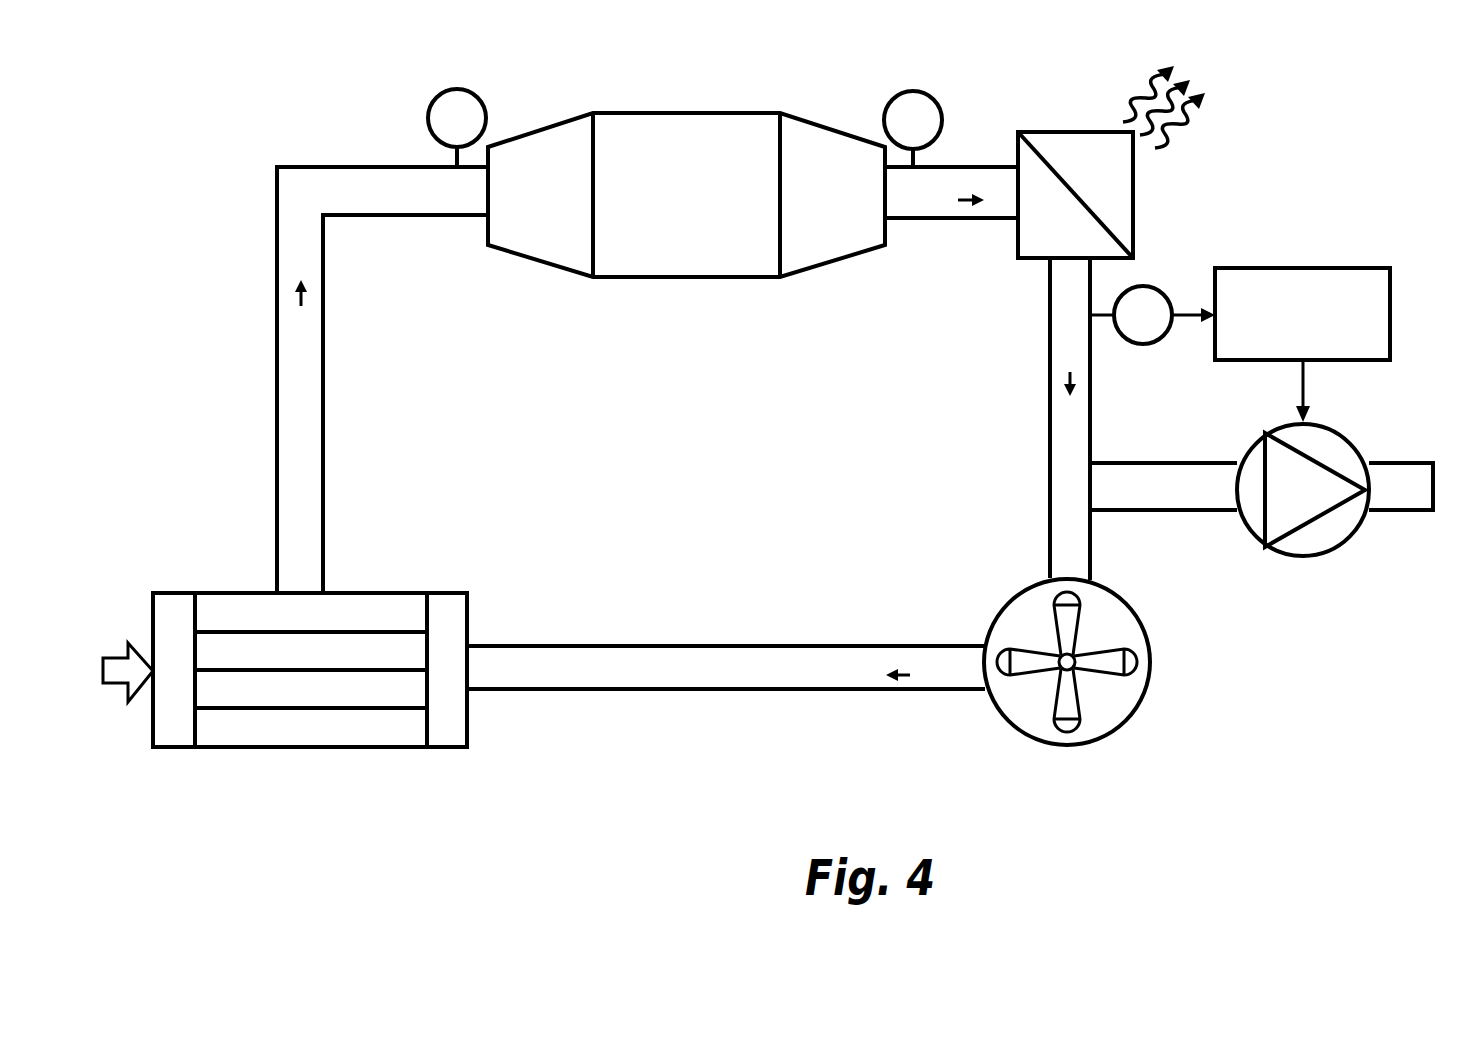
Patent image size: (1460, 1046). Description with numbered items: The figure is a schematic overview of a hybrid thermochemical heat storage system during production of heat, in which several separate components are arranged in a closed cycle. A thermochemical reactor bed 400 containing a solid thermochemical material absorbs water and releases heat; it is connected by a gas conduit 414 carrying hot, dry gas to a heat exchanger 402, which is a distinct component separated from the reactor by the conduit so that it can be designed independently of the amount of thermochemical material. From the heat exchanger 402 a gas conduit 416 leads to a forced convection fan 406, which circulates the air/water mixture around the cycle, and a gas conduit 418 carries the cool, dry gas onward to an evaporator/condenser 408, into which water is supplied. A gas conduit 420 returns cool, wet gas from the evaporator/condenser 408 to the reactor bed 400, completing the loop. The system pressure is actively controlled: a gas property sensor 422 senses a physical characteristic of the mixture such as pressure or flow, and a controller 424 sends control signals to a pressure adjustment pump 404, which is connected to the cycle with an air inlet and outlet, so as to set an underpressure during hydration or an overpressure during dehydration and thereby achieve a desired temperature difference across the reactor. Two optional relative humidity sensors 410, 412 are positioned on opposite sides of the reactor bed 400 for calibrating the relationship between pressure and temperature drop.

The thermochemical reactor bed 400 is at (695, 149).
The heat exchanger 402 is at (1077, 128).
The pressure adjustment pump 404 is at (1313, 563).
The forced convection fan 406 is at (1082, 745).
The evaporator/condenser 408 is at (285, 750).
The relative humidity sensor 410 is at (460, 92).
The relative humidity sensor 412 is at (915, 91).
The gas conduit 414 is at (927, 220).
The gas conduit 416 is at (1052, 542).
The gas conduit 418 is at (677, 690).
The gas conduit 420 is at (323, 379).
The gas property sensor 422 is at (1143, 344).
The controller 424 is at (1282, 312).